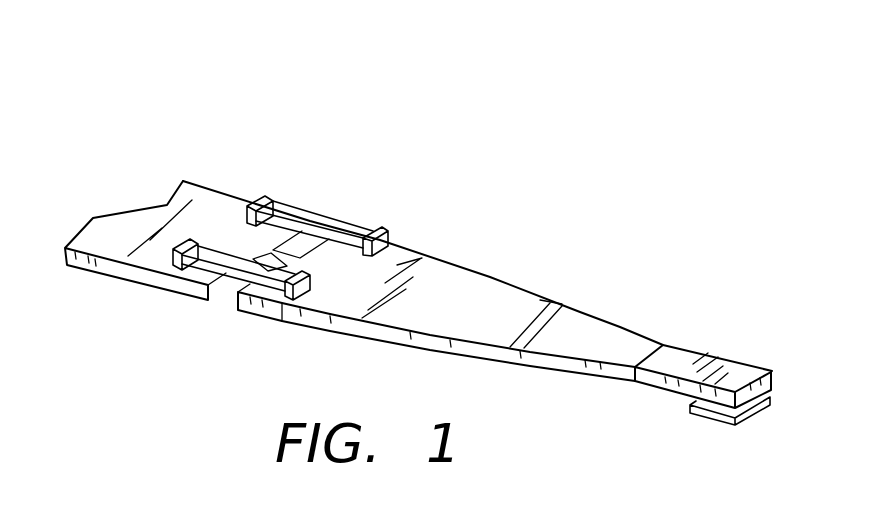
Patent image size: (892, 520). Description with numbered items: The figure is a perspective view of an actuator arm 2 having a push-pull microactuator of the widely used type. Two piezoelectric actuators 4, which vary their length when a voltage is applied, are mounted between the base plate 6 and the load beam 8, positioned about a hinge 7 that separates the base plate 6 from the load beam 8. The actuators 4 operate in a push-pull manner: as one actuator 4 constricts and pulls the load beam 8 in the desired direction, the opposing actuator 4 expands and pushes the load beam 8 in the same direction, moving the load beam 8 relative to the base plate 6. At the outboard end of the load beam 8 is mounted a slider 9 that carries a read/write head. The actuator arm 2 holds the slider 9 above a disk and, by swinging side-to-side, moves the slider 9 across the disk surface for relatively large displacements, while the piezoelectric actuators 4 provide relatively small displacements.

The actuator arm 2 is at (404, 199).
The piezoelectric actuators 4 is at (352, 232).
The base plate 6 is at (220, 203).
The hinge 7 is at (270, 251).
The load beam 8 is at (488, 286).
The slider 9 is at (702, 418).